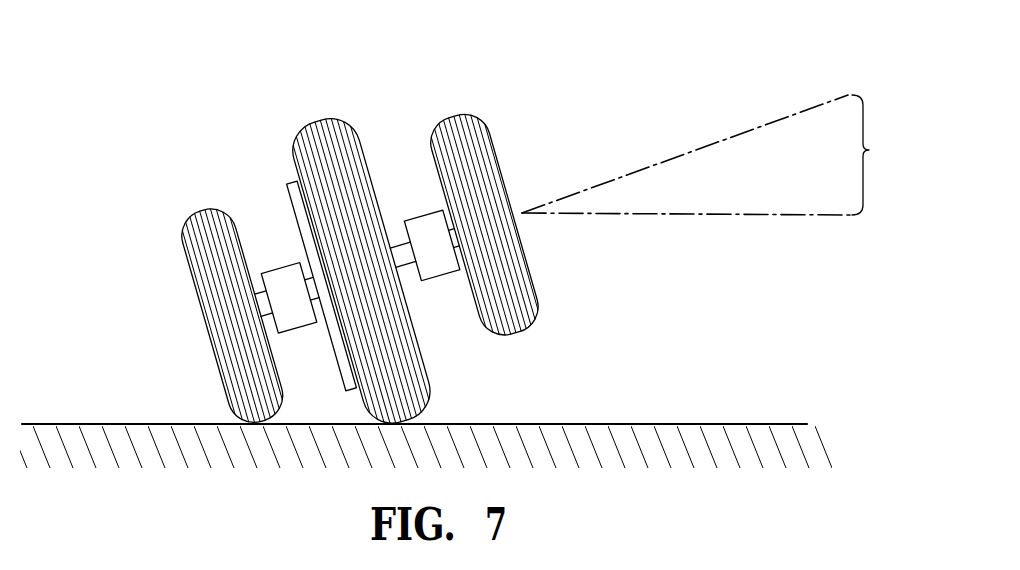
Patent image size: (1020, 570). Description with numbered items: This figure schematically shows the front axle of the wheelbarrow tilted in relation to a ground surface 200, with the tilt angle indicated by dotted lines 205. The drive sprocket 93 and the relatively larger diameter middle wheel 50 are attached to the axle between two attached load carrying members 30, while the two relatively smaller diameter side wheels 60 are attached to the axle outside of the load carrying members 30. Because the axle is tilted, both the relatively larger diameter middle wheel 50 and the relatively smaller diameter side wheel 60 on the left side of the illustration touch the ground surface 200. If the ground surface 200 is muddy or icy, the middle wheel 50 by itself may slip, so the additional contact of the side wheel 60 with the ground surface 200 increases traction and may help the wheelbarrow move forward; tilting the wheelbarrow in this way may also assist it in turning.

The load carrying member 30 is at (277, 268).
The relatively larger diameter middle wheel 50 is at (315, 138).
The relatively smaller diameter side wheel 60 is at (200, 222).
The drive sprocket 93 is at (289, 184).
The ground surface 200 is at (667, 423).
The dotted lines 205 is at (713, 155).